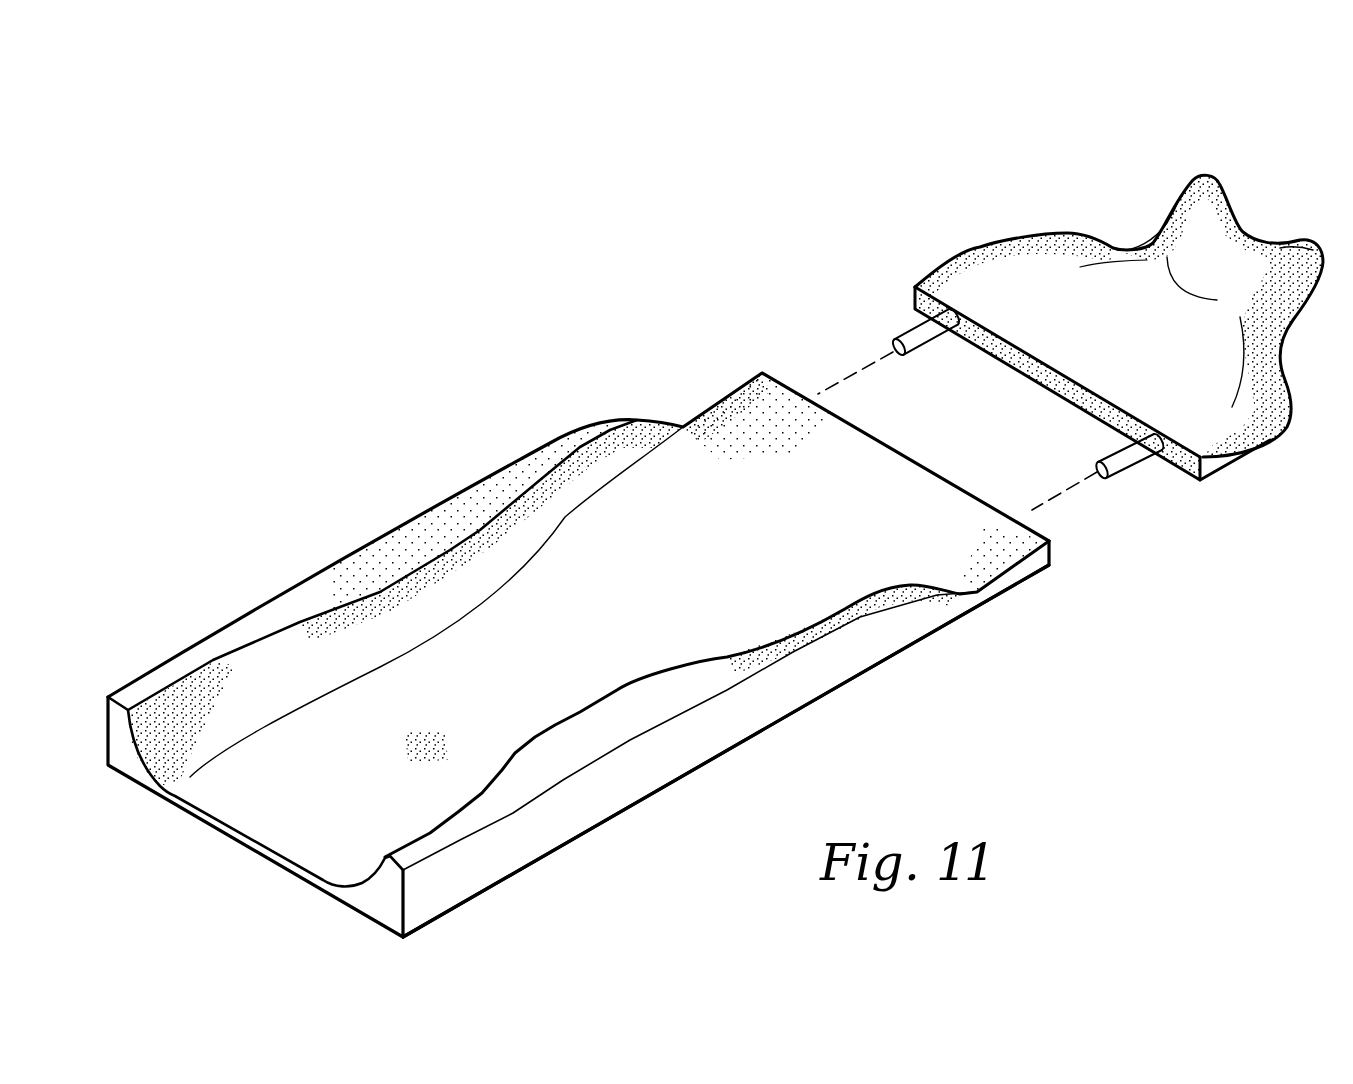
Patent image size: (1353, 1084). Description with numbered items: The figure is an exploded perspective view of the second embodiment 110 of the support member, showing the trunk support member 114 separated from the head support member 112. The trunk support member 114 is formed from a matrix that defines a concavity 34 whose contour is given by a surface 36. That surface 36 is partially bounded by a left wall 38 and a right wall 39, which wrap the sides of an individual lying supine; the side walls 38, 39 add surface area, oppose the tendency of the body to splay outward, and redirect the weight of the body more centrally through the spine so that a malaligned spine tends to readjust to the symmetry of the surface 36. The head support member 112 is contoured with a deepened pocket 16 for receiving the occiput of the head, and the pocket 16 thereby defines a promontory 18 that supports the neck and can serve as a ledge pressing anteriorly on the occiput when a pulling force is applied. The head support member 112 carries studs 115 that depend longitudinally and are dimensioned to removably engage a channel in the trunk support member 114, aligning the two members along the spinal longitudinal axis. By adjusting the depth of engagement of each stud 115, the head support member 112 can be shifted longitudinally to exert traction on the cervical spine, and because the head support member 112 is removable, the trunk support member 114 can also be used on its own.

The second embodiment 110 is at (480, 365).
The head support member 112 is at (1078, 197).
The trunk support member 114 is at (960, 663).
The studs 115 is at (913, 325).
The deepened pocket 16 is at (1197, 263).
The promontory 18 is at (1170, 353).
The concavity 34 is at (665, 572).
The surface 36 is at (437, 726).
The left wall 38 is at (623, 713).
The right wall 39 is at (383, 570).